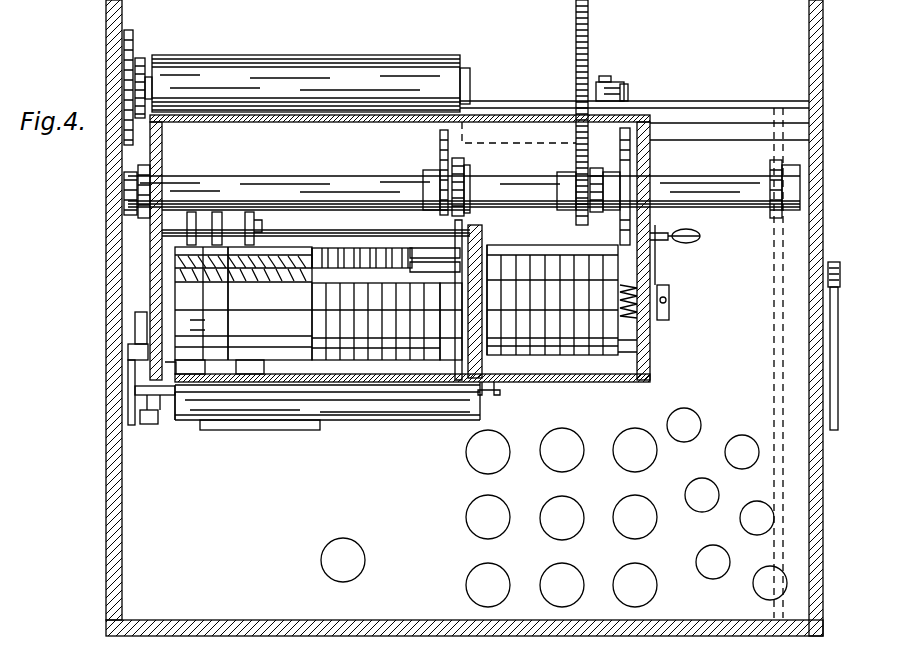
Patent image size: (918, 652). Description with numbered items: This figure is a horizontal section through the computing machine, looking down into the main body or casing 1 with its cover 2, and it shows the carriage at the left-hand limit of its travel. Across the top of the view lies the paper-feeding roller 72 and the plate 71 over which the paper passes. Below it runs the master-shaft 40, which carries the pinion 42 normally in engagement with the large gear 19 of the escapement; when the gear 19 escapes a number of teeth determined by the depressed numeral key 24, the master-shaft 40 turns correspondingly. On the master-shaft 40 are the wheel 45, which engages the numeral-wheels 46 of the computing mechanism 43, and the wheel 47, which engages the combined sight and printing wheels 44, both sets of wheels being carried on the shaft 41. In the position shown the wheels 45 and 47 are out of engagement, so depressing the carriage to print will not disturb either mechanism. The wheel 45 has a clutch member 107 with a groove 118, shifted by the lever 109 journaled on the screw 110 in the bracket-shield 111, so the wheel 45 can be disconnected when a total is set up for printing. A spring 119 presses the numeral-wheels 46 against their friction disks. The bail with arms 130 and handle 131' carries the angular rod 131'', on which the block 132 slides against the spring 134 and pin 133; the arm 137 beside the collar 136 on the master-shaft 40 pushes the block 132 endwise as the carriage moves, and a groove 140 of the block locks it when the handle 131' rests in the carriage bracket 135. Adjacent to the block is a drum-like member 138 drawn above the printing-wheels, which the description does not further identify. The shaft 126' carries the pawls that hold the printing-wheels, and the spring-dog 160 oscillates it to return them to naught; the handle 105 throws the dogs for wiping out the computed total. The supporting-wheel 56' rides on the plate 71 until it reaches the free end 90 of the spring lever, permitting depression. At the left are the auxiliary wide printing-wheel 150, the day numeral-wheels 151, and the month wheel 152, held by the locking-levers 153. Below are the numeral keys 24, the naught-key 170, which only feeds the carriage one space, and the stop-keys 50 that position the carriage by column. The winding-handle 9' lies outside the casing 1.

The main or body portion of casing 1 is at (785, 363).
The cover 2 is at (212, 625).
The winding-handle 9' is at (809, 346).
The large gear 19 is at (589, 60).
The keys 24 is at (548, 464).
The master-shaft 40 is at (313, 185).
The shaft 41 is at (451, 321).
The pinion 42 is at (575, 222).
The computing mechanism 43 is at (590, 362).
The combined sight and printing wheels 44 is at (390, 386).
The wheel 45 is at (651, 155).
The numeral-wheels 46 is at (505, 246).
The wheel 47 is at (436, 147).
The keys 50 is at (738, 436).
The supporting-wheel 56' is at (157, 430).
The plate 71 is at (211, 521).
The roller 72 is at (402, 96).
The free end of lever 90 is at (148, 402).
The handle 105 is at (492, 396).
The clutch member 107 is at (645, 152).
The lever 109 is at (628, 95).
The screw 110 is at (612, 83).
The bracket-shield 111 is at (697, 118).
The groove 118 is at (624, 218).
The spring 119 is at (670, 293).
The shaft 126' is at (636, 373).
The arms of bail 130 is at (460, 386).
The handle 131' is at (327, 438).
The angular bar or rod 131'' is at (251, 303).
The block 132 is at (376, 313).
The pin 133 is at (420, 270).
The spring 134 is at (250, 262).
The carriage bracket or handle 135 is at (265, 432).
The collar 136 is at (466, 176).
The arm 137 is at (470, 215).
The type wheel drum 138 is at (362, 247).
The grooves 140 is at (325, 248).
The wide printing-wheel 150 is at (243, 303).
The numeral-wheels 151 is at (230, 362).
The wheel 152 is at (190, 370).
The locking-levers 153 is at (249, 212).
The spring-dog 160 is at (134, 340).
The naught-key 170 is at (362, 554).